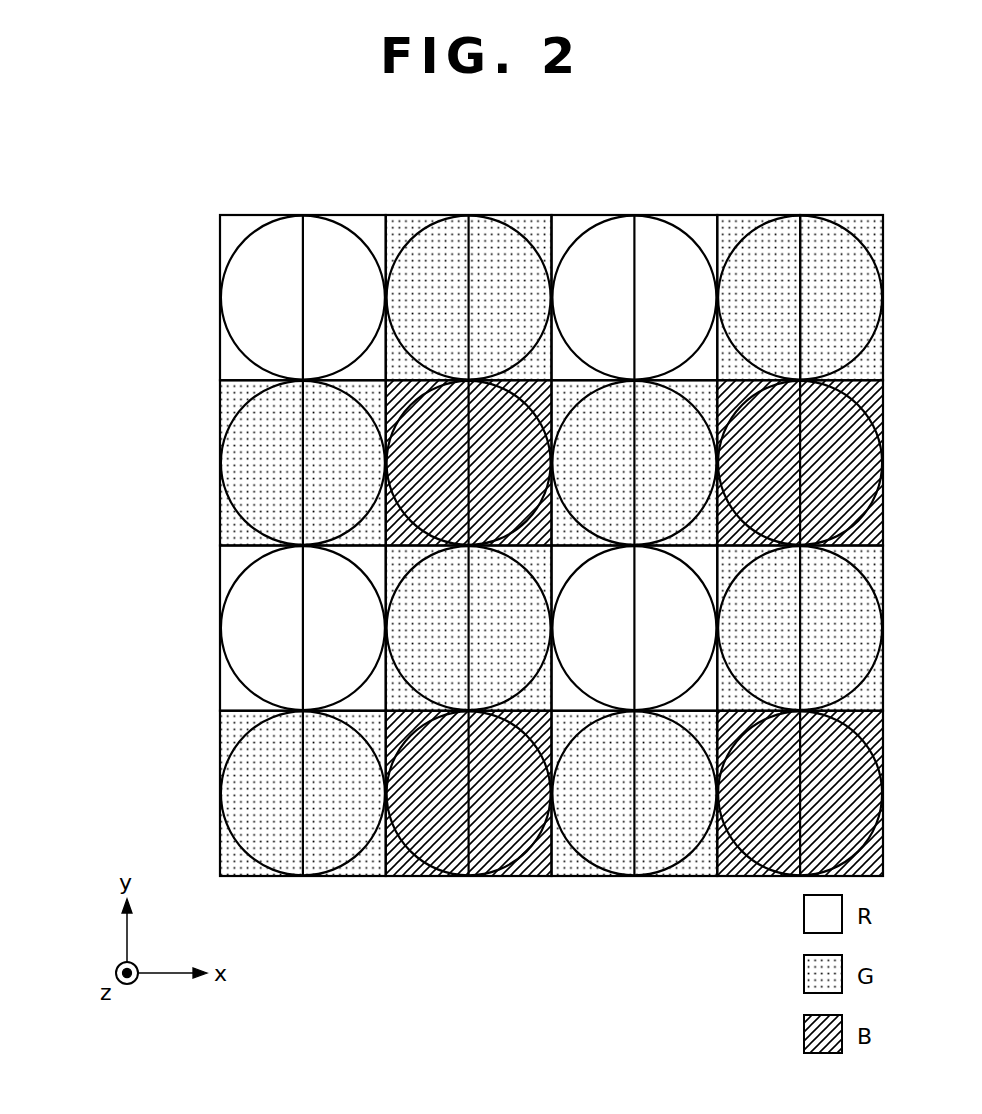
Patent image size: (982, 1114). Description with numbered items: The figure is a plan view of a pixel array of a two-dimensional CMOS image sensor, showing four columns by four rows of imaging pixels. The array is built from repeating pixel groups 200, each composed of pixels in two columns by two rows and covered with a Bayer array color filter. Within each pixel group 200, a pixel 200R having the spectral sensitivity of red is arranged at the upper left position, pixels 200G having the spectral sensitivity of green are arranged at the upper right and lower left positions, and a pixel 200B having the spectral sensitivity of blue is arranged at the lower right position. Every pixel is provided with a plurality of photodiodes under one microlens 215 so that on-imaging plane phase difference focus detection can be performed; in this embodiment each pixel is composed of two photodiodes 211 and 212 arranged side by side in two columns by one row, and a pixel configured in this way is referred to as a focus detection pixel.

The pixel group 200 is at (462, 518).
The pixel having the spectral sensitivity of R 200R is at (505, 270).
The pixel having the spectral sensitivity of G 200G is at (248, 418).
The pixel having the spectral sensitivity of B 200B is at (405, 476).
The photodiode 211 is at (763, 244).
The photodiode 212 is at (820, 244).
The microlens 215 is at (262, 222).